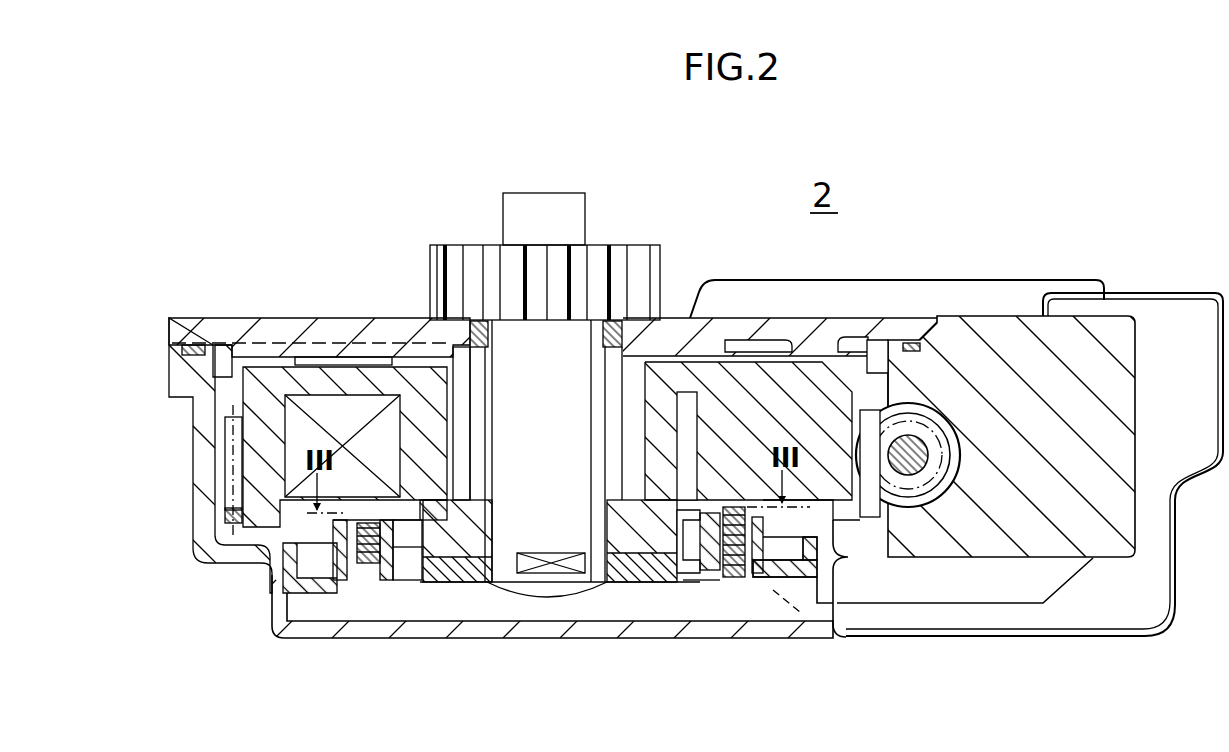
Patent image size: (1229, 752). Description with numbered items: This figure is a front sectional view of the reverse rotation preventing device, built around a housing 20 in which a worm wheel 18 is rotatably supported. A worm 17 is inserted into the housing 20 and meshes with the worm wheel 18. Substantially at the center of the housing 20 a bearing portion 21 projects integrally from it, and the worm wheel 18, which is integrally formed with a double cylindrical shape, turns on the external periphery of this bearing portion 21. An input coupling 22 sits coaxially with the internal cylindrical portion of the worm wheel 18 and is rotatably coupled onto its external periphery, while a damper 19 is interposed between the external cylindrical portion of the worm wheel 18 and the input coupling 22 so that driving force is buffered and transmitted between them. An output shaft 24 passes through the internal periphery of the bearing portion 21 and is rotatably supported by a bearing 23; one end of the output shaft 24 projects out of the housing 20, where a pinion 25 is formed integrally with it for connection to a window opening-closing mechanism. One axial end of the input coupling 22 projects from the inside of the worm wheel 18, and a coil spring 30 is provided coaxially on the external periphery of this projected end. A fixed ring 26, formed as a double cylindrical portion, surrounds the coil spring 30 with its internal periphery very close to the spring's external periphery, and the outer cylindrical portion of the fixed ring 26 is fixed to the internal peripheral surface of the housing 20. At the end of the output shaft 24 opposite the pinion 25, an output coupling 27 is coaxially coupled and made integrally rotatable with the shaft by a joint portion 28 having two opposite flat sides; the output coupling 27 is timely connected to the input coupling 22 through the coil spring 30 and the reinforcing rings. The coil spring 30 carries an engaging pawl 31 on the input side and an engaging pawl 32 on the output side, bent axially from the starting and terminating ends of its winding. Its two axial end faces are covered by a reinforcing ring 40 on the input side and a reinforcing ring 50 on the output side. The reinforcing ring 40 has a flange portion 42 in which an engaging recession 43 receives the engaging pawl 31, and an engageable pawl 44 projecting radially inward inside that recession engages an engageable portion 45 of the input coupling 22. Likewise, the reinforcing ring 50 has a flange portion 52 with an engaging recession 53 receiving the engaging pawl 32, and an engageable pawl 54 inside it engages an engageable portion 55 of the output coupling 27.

The worm 17 is at (958, 443).
The worm wheel 18 is at (853, 402).
The damper 19 is at (340, 420).
The housing 20 is at (943, 278).
The bearing portion 21 is at (462, 378).
The input coupling 22 is at (457, 540).
The bearing 23 is at (480, 453).
The output shaft 24 is at (587, 230).
The pinion 25 is at (665, 277).
The fixed ring 26 is at (297, 600).
The output coupling 27 is at (633, 575).
The joint portion 28 is at (550, 573).
The coil spring 30 is at (372, 580).
The engaging pawl on the input side 31 is at (737, 508).
The engaging pawl on the output side 32 is at (747, 590).
The reinforcing ring on the input side 40 is at (383, 512).
The flange portion 42 is at (368, 520).
The engaging recession 43 is at (763, 523).
The engageable pawl 44 is at (697, 520).
The engageable portion 45 is at (683, 523).
The reinforcing ring on the output side 50 is at (393, 583).
The flange portion 52 is at (363, 587).
The engaging recession 53 is at (823, 627).
The engageable pawl 54 is at (700, 587).
The engageable portion 55 is at (687, 580).